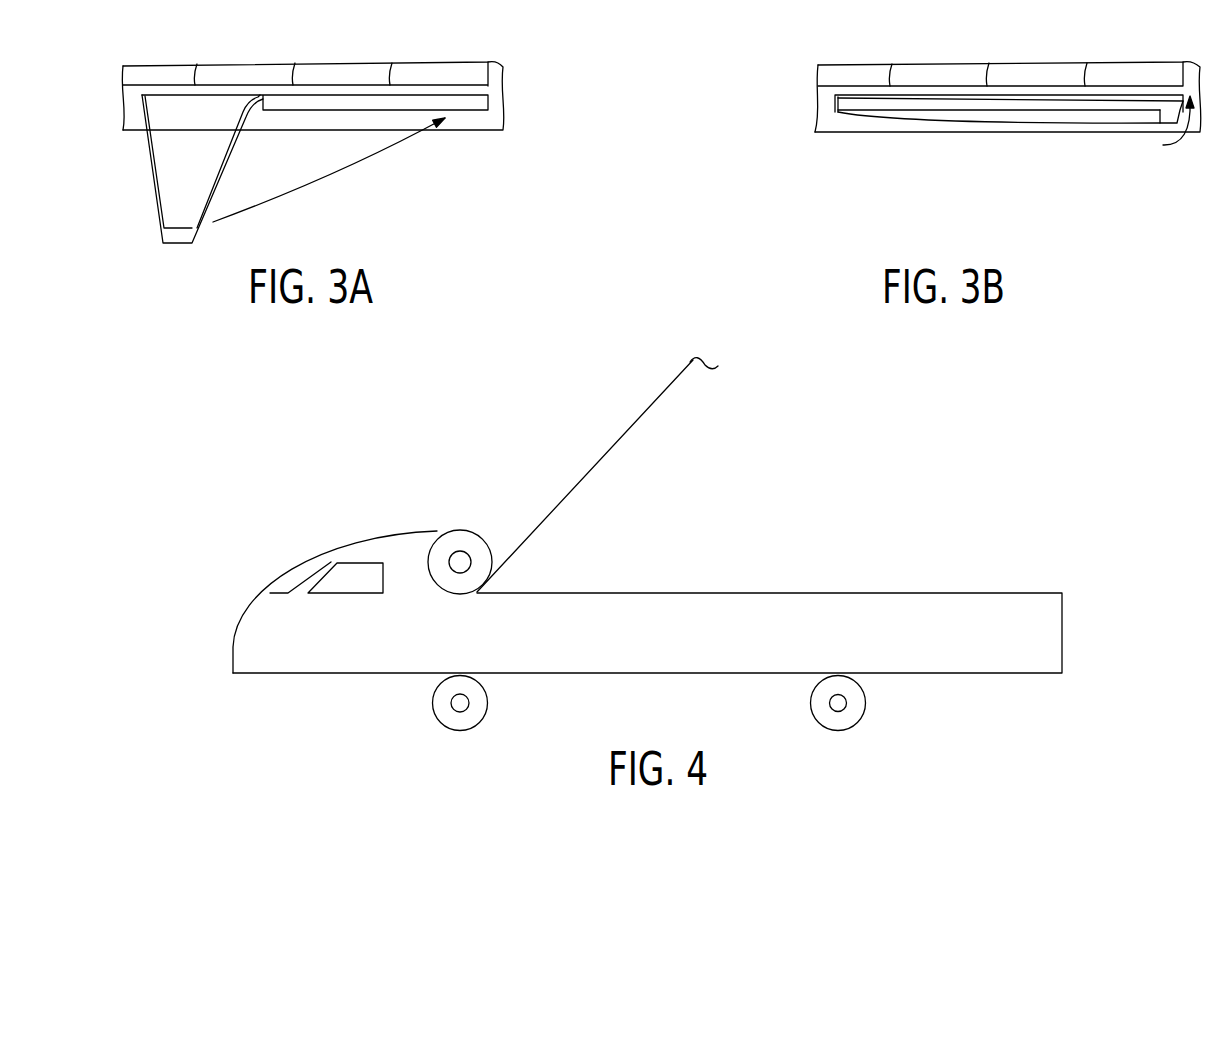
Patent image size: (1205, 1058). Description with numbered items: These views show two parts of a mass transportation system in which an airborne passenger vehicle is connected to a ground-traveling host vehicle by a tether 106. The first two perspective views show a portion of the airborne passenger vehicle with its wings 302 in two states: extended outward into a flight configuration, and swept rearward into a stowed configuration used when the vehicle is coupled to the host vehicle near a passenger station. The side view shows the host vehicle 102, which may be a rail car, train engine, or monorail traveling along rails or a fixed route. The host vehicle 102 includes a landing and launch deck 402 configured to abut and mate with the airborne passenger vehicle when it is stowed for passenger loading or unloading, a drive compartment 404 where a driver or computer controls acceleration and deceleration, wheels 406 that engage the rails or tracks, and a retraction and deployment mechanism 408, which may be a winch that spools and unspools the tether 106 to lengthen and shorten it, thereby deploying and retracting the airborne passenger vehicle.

In FIG. 3A, the wings 302 is at (170, 190).
In FIG. 3B, the wings 302 is at (993, 113).
In FIG. 4, the host vehicle 102 is at (238, 471).
In FIG. 4, the tether 106 is at (600, 465).
In FIG. 4, the landing and launch deck 402 is at (725, 593).
In FIG. 4, the drive compartment 404 is at (357, 580).
In FIG. 4, the wheels 406 is at (438, 698).
In FIG. 4, the retraction and deployment mechanism 408 is at (458, 538).